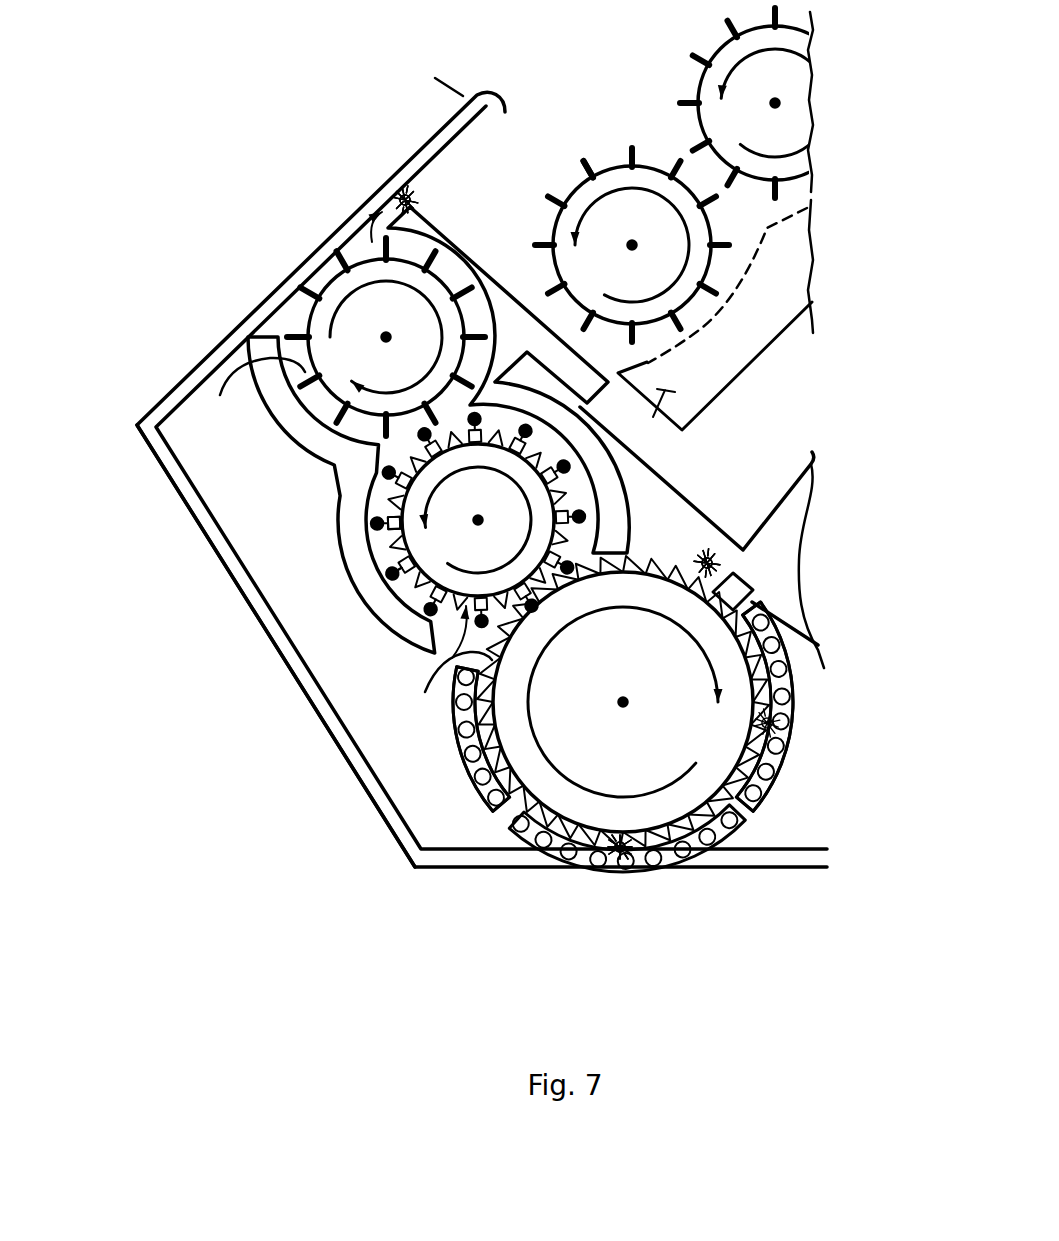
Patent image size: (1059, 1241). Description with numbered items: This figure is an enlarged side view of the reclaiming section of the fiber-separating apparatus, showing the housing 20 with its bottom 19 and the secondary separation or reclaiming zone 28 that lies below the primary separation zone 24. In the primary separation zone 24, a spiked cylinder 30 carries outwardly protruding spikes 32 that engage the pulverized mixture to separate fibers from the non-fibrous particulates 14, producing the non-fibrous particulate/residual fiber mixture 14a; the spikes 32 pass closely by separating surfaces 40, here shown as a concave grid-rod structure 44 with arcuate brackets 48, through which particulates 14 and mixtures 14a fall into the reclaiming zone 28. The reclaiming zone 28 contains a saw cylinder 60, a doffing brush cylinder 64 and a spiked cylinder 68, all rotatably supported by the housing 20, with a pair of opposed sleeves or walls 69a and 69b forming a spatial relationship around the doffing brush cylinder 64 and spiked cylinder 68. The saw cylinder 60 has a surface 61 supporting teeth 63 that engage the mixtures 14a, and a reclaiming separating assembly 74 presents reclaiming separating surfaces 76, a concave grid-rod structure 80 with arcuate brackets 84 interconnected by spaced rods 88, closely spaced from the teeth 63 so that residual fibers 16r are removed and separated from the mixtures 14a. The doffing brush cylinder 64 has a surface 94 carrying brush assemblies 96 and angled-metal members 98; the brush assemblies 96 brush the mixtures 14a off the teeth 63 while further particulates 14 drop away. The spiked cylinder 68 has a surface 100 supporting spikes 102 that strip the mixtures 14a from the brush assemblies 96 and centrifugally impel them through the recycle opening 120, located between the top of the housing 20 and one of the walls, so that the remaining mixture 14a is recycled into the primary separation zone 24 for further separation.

The non-fibrous particulates 14 is at (725, 562).
The non-fibrous particulate/residual fiber mixture 14a is at (430, 172).
The residual fibers 16r is at (423, 193).
The bottom 19 is at (772, 502).
The housing 20 is at (178, 368).
The primary separation zone 24 is at (568, 127).
The secondary separation or reclaiming zone 28 is at (305, 617).
The spiked cylinder 30 is at (573, 187).
The spikes 32 is at (585, 157).
The separating surfaces 40 is at (688, 340).
The concave grid-rod structure 44 is at (747, 297).
The arcuate brackets 48 is at (653, 419).
The saw cylinder 60 is at (665, 563).
The surface 61 is at (668, 723).
The teeth 63 is at (712, 533).
The doffing brush cylinder 64 is at (423, 668).
The spiked cylinder 68 is at (358, 252).
The sleeve or wall 69a is at (312, 430).
The sleeve or wall 69b is at (527, 328).
The reclaiming separating assembly 74 is at (452, 657).
The reclaiming separating surfaces 76 is at (753, 817).
The concave grid-rod structure 80 is at (445, 742).
The arcuate brackets 84 is at (470, 775).
The spaced rods 88 is at (452, 707).
The surface 94 is at (388, 490).
The brush assemblies 96 is at (385, 530).
The angled-metal members 98 is at (387, 562).
The surface 100 is at (326, 287).
The spikes 102 is at (245, 394).
The recycle opening 120 is at (403, 190).